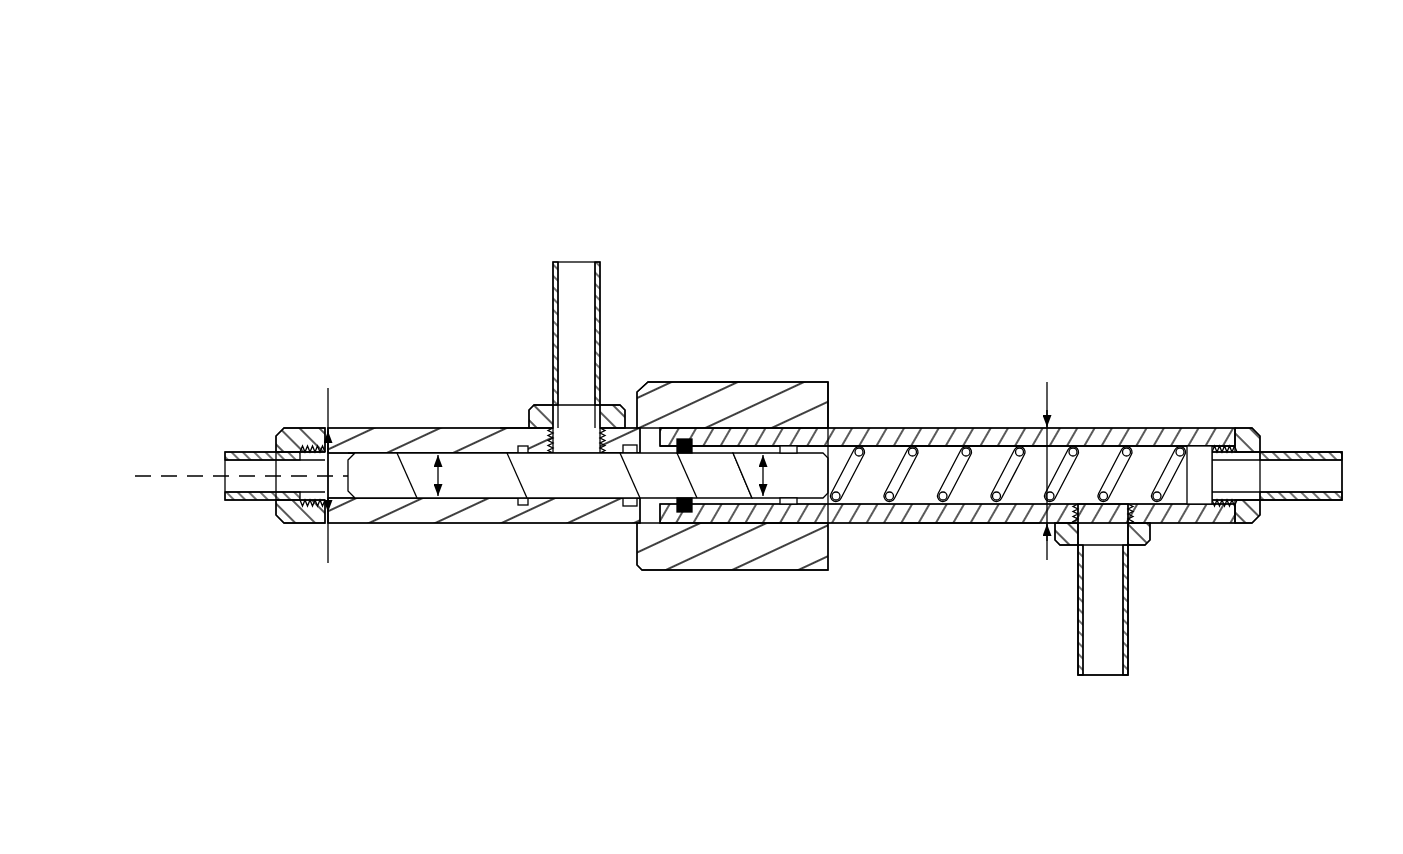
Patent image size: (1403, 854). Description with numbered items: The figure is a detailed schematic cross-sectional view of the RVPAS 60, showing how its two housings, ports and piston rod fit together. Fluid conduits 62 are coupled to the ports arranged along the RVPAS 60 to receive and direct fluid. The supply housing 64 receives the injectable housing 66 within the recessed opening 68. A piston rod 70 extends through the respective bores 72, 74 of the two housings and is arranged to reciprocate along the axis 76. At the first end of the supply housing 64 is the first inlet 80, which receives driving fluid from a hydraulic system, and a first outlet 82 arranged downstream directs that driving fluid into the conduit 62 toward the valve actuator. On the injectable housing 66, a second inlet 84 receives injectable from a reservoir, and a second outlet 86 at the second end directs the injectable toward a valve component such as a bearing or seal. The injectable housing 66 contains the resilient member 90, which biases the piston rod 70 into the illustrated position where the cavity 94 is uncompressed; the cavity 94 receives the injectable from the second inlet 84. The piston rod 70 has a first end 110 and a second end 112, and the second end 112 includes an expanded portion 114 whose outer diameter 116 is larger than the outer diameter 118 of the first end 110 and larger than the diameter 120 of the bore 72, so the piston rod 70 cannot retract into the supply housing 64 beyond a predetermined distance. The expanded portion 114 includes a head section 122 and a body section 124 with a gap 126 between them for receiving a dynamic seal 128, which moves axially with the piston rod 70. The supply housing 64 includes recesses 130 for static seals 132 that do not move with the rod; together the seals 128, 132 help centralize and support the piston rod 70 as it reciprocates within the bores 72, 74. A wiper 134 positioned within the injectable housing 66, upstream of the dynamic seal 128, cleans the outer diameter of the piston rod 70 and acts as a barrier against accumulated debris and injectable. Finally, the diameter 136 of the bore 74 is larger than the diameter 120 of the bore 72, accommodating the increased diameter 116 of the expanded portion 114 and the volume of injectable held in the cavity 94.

The RVPAS 60 is at (1068, 157).
The conduit 62 is at (600, 265).
The supply housing 64 is at (342, 425).
The injectable housing 66 is at (976, 527).
The recessed opening 68 is at (851, 407).
The piston rod 70 is at (751, 443).
The bore 72 is at (420, 500).
The bore 74 is at (916, 508).
The axis 76 is at (140, 475).
The first inlet 80 is at (290, 536).
The first outlet 82 is at (622, 384).
The second inlet 84 is at (1153, 548).
The second outlet 86 is at (1268, 438).
The resilient member 90 is at (1130, 459).
The cavity 94 is at (986, 475).
The first end 110 is at (396, 412).
The second end 112 is at (908, 407).
The expanded portion 114 is at (750, 515).
The outer diameter 116 is at (758, 476).
The outer diameter 118 is at (444, 475).
The diameter 120 is at (328, 403).
The head section 122 is at (815, 422).
The body section 124 is at (705, 425).
The gap 126 is at (788, 497).
The dynamic seal 128 is at (809, 513).
The recesses 130 is at (518, 437).
The static seals 132 is at (614, 510).
The wiper 134 is at (681, 514).
The diameter 136 is at (1047, 560).